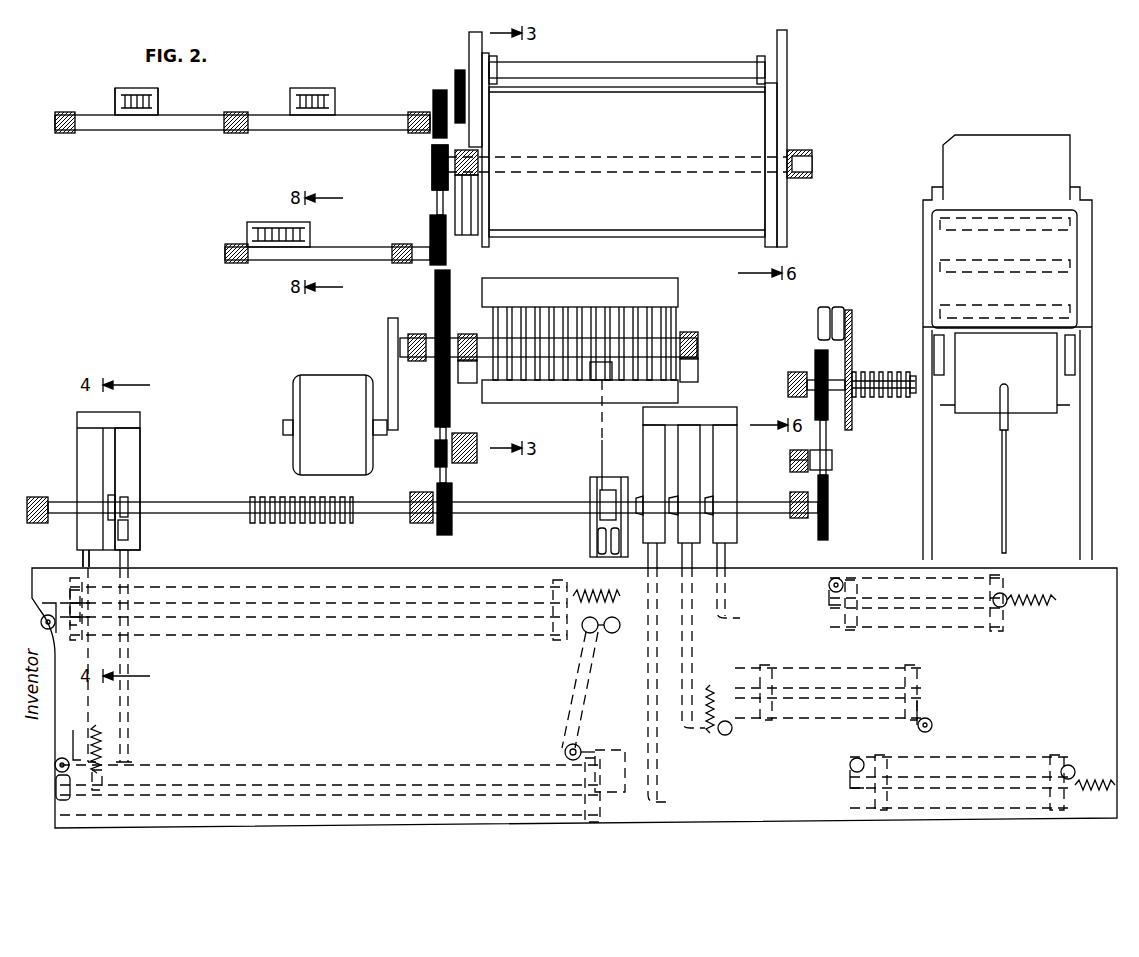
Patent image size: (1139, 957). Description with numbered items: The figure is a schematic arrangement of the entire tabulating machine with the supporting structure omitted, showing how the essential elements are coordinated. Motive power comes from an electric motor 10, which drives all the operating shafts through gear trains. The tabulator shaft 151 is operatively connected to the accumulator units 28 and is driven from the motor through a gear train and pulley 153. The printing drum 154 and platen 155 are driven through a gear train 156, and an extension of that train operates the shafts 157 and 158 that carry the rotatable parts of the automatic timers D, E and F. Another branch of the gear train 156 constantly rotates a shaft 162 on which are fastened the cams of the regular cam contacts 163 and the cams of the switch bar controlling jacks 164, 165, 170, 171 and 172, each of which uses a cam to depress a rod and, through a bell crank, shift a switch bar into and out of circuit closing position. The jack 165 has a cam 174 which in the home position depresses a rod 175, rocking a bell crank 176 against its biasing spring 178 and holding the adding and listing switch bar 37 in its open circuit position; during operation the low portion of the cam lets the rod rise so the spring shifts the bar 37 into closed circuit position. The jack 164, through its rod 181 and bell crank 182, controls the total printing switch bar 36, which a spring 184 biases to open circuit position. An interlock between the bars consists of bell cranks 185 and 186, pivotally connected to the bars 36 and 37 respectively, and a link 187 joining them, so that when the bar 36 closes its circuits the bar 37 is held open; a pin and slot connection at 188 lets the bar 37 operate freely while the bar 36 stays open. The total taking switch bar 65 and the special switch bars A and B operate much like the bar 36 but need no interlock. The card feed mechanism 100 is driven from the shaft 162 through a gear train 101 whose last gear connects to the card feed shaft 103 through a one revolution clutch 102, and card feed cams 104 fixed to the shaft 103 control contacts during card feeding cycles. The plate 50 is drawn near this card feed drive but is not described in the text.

The electric motor 10 is at (330, 385).
The accumulator units 28 is at (668, 316).
The total printing switch bar 36 is at (420, 605).
The adding and listing switch bar 37 is at (275, 785).
The plate 50 is at (852, 310).
The total taking switch bar 65 is at (946, 600).
The card feed mechanism 100 is at (945, 230).
The gear train 101 is at (828, 438).
The one revolution clutch 102 is at (850, 355).
The card feed shaft 103 is at (858, 370).
The card feed cams 104 is at (890, 394).
The tabulator shaft 151 is at (595, 338).
The pulley 153 is at (394, 318).
The printing drum 154 is at (748, 118).
The platen 155 is at (598, 70).
The gear train 156 is at (432, 160).
The shaft 157 is at (343, 257).
The shaft 158 is at (356, 125).
The shaft 162 is at (762, 513).
The regular cam contacts 163 is at (297, 522).
The jack 164 is at (85, 444).
The jack 165 is at (130, 440).
The jack 170 is at (725, 468).
The jack 171 is at (663, 440).
The jack 172 is at (690, 448).
The cam 174 is at (125, 500).
The rod 175 is at (128, 692).
The bell crank 176 is at (64, 733).
The biasing spring 178 is at (100, 740).
The rod 181 is at (80, 555).
The bell crank 182 is at (77, 627).
The spring 184 is at (588, 592).
The bell crank 185 is at (612, 632).
The bell crank 186 is at (596, 755).
The link 187 is at (590, 685).
The pin and slot connection 188 is at (568, 747).
The special switch bar A is at (820, 690).
The special switch bar B is at (950, 775).
The automatic timer D is at (137, 88).
The automatic timer E is at (312, 88).
The automatic timer F is at (278, 224).